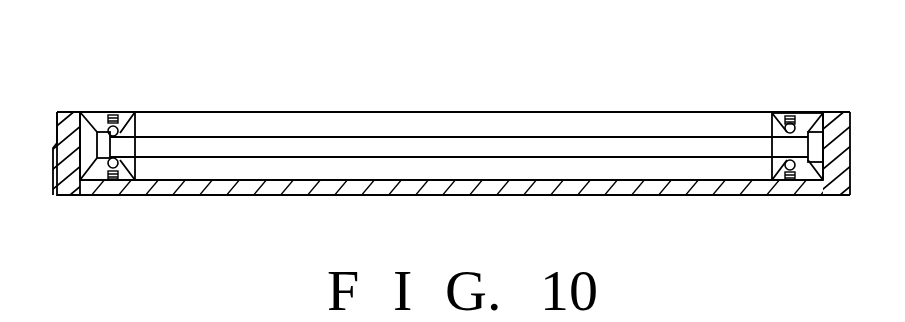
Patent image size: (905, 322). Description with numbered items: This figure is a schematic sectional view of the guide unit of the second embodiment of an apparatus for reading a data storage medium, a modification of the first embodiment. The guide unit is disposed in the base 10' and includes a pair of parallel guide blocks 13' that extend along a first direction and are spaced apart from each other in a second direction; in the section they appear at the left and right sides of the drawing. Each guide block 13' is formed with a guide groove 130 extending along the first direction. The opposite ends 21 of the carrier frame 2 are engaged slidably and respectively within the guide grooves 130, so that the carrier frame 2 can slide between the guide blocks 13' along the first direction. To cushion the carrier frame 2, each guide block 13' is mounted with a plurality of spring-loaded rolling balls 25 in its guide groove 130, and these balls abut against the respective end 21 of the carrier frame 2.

The carrier frame 2 is at (210, 147).
The base 10' is at (106, 108).
The guide block 13' is at (464, 90).
The end of carrier frame 21 is at (112, 142).
The spring-loaded rolling ball 25 is at (72, 146).
The guide groove 130 is at (100, 143).